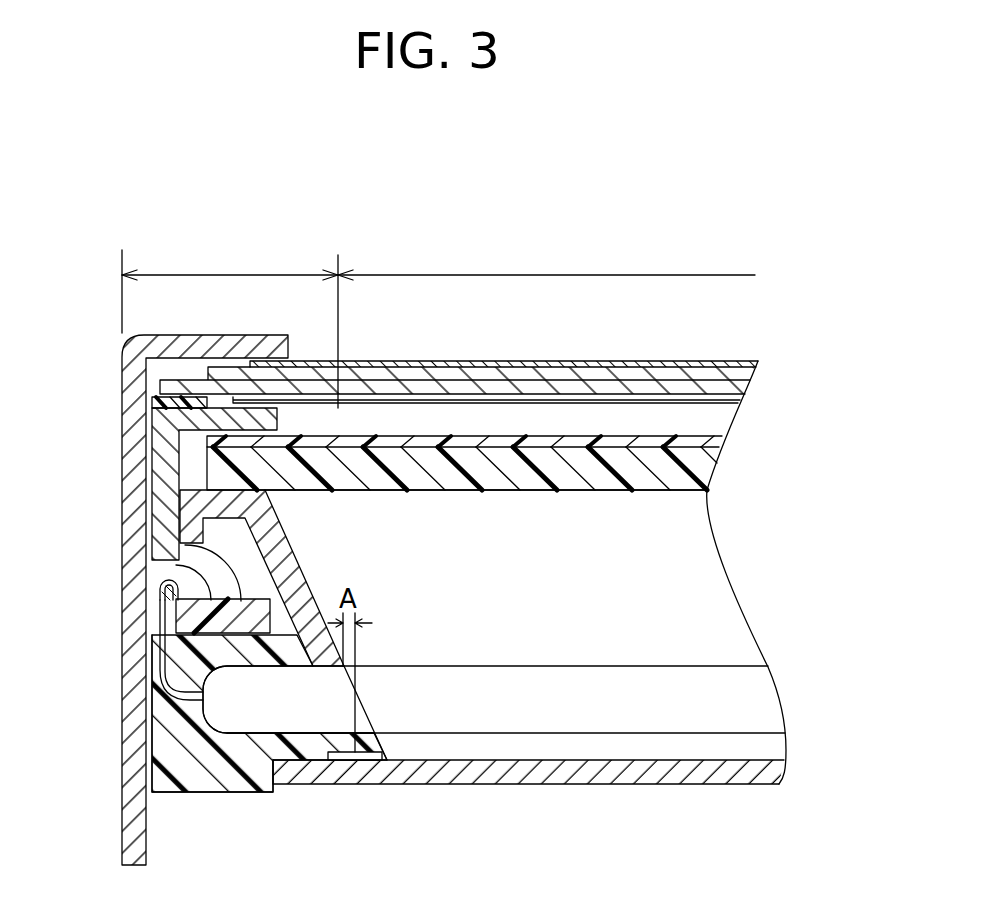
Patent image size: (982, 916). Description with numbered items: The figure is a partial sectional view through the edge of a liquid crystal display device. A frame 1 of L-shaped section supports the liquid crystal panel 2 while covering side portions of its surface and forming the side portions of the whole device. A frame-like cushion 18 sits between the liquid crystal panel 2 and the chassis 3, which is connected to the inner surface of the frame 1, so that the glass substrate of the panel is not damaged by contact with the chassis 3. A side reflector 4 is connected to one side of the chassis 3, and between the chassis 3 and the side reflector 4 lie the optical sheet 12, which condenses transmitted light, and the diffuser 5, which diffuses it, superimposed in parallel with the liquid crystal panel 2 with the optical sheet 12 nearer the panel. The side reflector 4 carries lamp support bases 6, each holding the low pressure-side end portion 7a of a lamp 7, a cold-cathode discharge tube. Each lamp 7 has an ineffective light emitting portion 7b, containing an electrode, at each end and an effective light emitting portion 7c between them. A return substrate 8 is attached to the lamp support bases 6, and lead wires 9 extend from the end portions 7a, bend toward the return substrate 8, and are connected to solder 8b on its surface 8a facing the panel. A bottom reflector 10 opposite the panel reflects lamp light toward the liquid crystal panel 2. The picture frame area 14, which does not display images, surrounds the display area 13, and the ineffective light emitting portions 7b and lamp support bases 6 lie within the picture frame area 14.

The frame 1 is at (202, 346).
The liquid crystal panel 2 is at (690, 367).
The chassis 3 is at (162, 455).
The side reflector 4 is at (277, 552).
The diffuser 5 is at (694, 474).
The lamp support base 6 is at (168, 794).
The lamp 7 is at (420, 828).
The low pressure-side end portion 7a is at (229, 736).
The ineffective light emitting portion 7b is at (338, 715).
The effective light emitting portion 7c is at (485, 715).
The return substrate 8 is at (196, 543).
The surface of the return substrate 8a is at (181, 561).
The solder 8b is at (162, 590).
The lead wire 9 is at (172, 676).
The bottom reflector 10 is at (688, 773).
The optical sheet 12 is at (705, 438).
The display area 13 is at (530, 275).
The picture frame area 14 is at (217, 275).
The cushion 18 is at (160, 404).